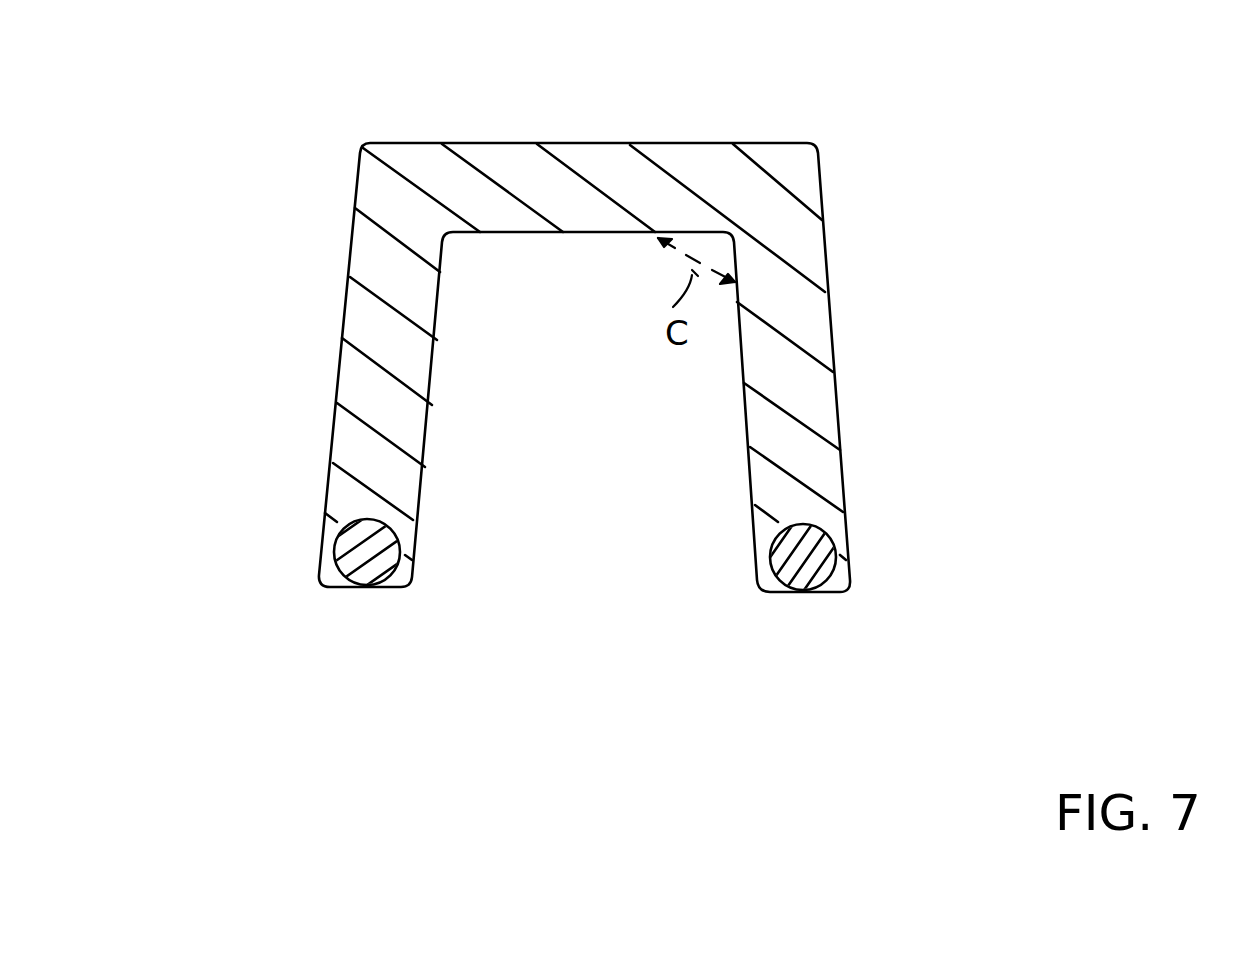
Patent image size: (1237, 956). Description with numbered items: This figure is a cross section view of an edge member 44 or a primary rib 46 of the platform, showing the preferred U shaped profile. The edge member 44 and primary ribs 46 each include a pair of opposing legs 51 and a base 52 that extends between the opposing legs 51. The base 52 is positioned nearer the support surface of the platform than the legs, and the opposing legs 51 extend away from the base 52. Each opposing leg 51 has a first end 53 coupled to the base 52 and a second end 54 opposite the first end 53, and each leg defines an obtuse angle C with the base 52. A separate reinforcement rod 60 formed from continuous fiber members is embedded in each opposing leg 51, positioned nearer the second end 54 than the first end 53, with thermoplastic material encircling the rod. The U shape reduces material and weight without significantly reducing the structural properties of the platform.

The edge member 44 is at (737, 316).
The primary ribs 46 is at (1000, 150).
The opposing legs 51 is at (362, 380).
The base 52 is at (636, 167).
The first end 53 is at (362, 248).
The second end 54 is at (410, 538).
The reinforcement rods 60 is at (372, 557).